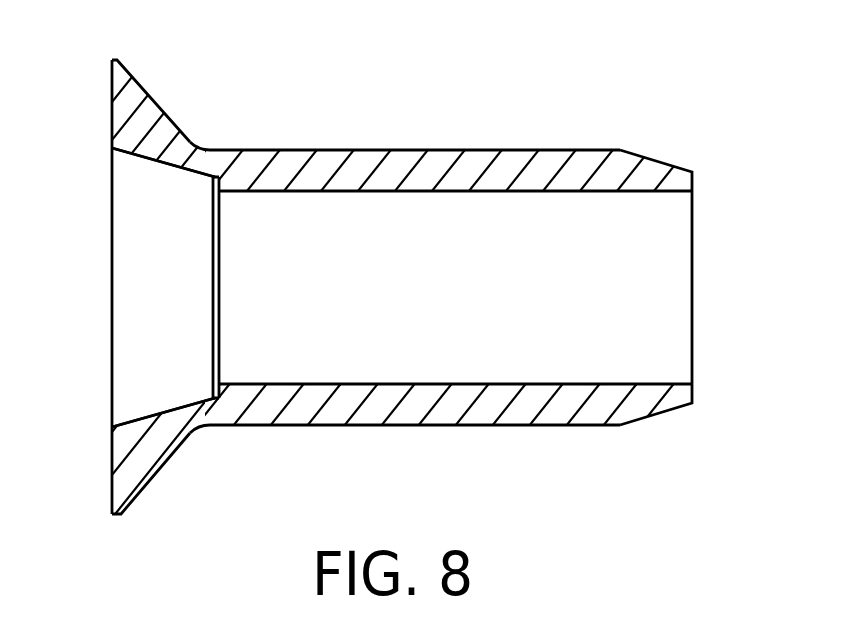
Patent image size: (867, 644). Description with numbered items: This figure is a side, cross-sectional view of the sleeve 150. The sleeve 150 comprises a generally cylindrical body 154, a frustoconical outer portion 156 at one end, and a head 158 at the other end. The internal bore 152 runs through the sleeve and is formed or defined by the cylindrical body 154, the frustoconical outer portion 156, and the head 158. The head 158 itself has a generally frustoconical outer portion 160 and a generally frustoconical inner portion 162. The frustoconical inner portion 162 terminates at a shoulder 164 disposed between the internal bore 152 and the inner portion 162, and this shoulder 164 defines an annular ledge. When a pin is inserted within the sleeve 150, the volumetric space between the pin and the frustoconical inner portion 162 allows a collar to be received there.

The sleeve 150 is at (629, 82).
The internal bore 152 is at (658, 274).
The cylindrical body 154 is at (262, 155).
The frustoconical outer portion 156 is at (663, 163).
The head 158 is at (129, 73).
The frustoconical outer portion 160 is at (178, 130).
The frustoconical inner portion 162 is at (167, 148).
The shoulder 164 is at (210, 189).